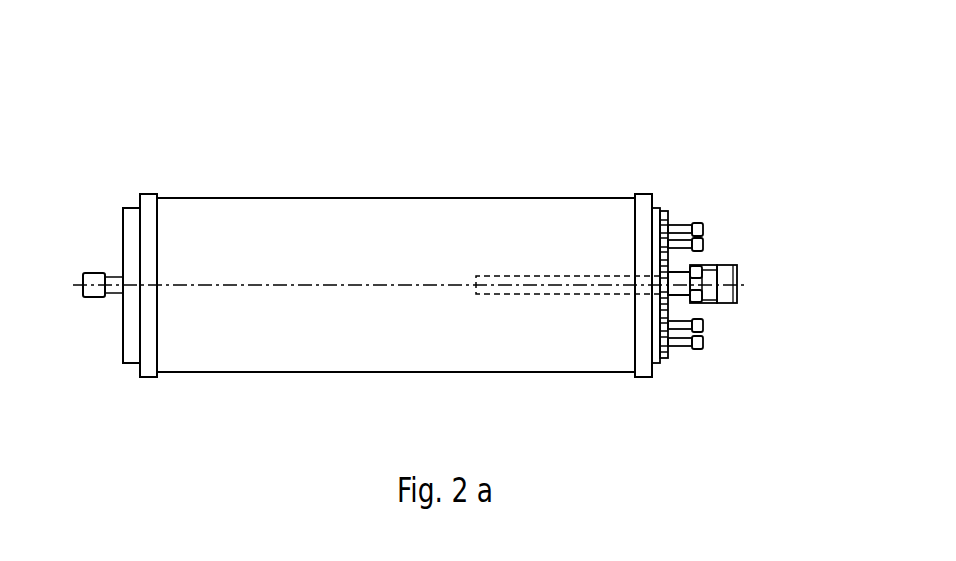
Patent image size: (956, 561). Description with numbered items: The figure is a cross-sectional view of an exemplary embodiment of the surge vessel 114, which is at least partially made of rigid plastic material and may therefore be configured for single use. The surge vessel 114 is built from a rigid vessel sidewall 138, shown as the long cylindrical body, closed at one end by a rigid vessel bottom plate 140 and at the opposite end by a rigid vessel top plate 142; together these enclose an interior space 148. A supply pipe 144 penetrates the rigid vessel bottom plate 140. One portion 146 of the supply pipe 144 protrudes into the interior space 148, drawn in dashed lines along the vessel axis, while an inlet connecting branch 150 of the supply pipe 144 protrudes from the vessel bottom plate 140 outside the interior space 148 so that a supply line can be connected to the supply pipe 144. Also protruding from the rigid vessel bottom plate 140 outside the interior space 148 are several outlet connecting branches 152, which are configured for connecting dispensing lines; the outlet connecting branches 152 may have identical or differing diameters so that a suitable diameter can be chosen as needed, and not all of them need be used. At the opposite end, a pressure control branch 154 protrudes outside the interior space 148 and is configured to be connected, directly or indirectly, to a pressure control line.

The surge vessel 114 is at (731, 131).
The rigid vessel sidewall 138 is at (372, 198).
The rigid vessel bottom plate 140 is at (643, 203).
The rigid vessel top plate 142 is at (134, 212).
The supply pipe 144 is at (661, 320).
The portion of the supply pipe 146 is at (512, 294).
The interior space 148 is at (478, 230).
The inlet connecting branch 150 is at (715, 280).
The outlet connecting branch 152 is at (733, 302).
The pressure control branch 154 is at (93, 279).